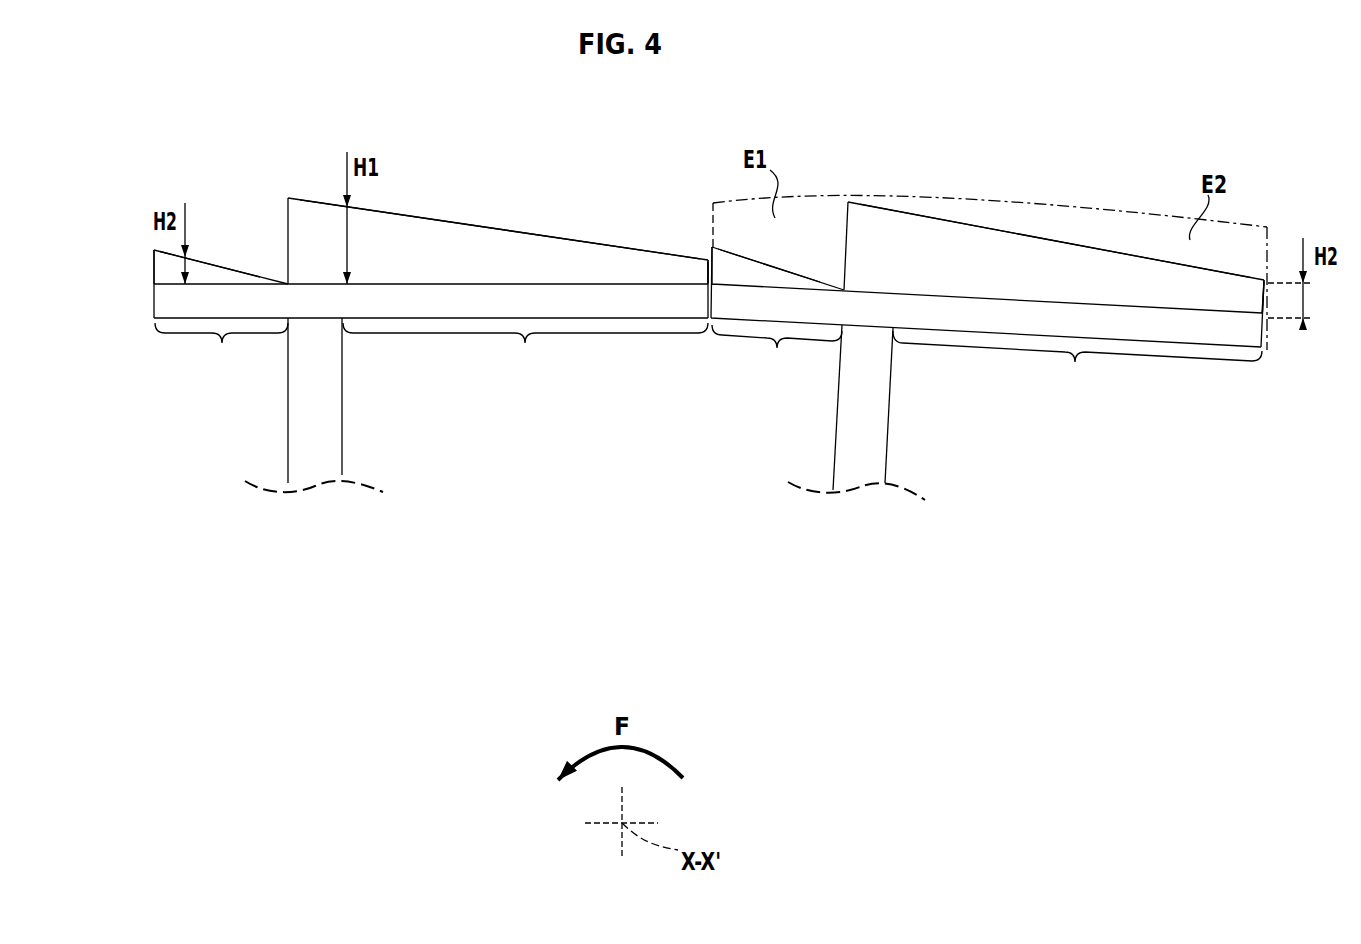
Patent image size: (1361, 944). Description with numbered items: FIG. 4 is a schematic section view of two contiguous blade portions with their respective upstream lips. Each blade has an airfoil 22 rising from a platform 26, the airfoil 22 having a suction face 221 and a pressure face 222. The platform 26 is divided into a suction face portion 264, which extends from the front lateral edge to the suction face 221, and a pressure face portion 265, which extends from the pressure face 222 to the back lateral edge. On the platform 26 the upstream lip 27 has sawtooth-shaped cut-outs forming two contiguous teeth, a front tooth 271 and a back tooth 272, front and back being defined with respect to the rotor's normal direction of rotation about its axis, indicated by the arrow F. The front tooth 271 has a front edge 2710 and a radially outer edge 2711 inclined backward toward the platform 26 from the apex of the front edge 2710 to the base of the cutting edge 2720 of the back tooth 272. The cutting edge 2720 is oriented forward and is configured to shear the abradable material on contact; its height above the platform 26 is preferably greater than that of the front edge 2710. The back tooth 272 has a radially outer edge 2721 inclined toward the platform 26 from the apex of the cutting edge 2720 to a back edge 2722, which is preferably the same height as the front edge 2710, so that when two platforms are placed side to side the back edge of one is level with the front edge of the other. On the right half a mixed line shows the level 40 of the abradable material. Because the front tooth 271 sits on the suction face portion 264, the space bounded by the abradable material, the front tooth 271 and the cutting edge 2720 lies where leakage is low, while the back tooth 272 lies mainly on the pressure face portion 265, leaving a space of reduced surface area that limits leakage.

The airfoil 22 is at (590, 409).
The suction face 221 is at (288, 398).
The pressure face 222 is at (342, 398).
The platform 26 is at (440, 316).
The suction face portion 264 is at (498, 350).
The pressure face portion 265 is at (802, 359).
The upstream lip 27 is at (439, 204).
The front tooth 271 is at (218, 272).
The back tooth 272 is at (515, 269).
The front edge 2710 is at (153, 267).
The radially outer edge 2711 is at (205, 255).
The cutting edge 2720 is at (287, 225).
The radially outer edge 2721 is at (555, 232).
The back edge 2722 is at (717, 270).
The level of the abradable material 40 is at (868, 193).